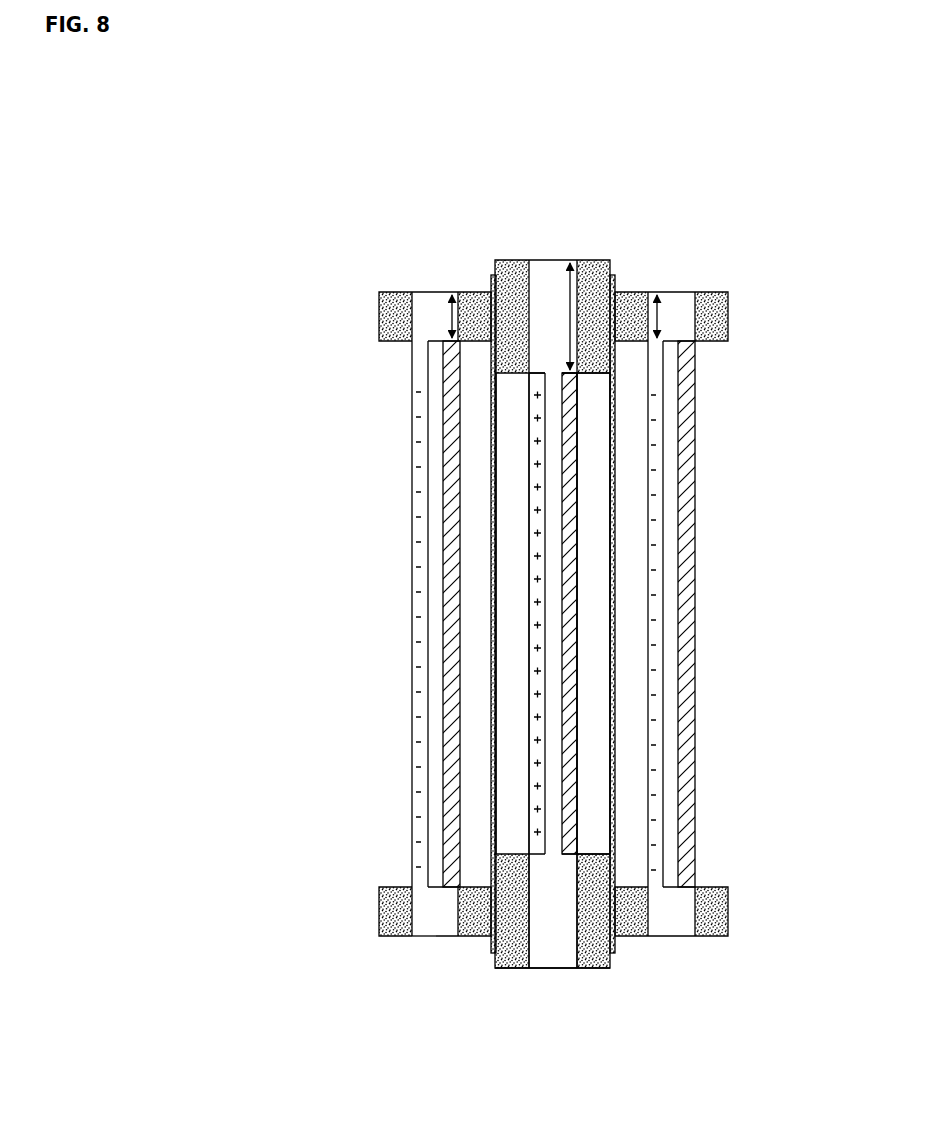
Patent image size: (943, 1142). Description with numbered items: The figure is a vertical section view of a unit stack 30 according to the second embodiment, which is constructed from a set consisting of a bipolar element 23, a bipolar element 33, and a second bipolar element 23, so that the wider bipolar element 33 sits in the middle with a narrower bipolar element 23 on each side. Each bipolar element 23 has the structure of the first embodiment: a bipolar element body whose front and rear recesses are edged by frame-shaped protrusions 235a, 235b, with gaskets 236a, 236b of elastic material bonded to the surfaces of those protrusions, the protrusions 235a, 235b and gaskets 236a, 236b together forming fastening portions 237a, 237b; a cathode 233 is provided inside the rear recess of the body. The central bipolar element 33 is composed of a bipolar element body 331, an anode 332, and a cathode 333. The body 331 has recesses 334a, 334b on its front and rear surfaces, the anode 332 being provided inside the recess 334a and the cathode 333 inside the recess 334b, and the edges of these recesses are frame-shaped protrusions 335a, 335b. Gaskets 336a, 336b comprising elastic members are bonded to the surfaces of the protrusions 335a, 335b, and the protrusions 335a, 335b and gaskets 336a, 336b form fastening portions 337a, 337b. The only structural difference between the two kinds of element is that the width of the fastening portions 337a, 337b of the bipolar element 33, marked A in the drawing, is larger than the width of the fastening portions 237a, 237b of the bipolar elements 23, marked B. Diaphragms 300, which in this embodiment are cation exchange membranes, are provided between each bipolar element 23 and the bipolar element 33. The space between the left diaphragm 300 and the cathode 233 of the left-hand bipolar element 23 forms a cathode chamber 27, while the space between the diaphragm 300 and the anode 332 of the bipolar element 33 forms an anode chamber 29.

The unit stack 30 is at (527, 157).
The bipolar element 23 is at (430, 250).
The bipolar element 33 is at (543, 246).
The cathode chamber 27 is at (489, 622).
The anode chamber 29 is at (525, 622).
The diaphragm 300 is at (493, 533).
The cathode 233 is at (447, 425).
The anode 332 is at (533, 733).
The cathode 333 is at (577, 677).
The recess 334a is at (545, 675).
The recess 334b is at (580, 630).
The bipolar element body 331 is at (553, 903).
The protrusion 235a is at (423, 918).
The protrusion 235b is at (453, 917).
The gasket 236a is at (390, 905).
The gasket 236b is at (483, 933).
The fastening portion 237a is at (318, 990).
The fastening portion 237b is at (438, 1023).
The protrusion 335a is at (537, 957).
The protrusion 335b is at (570, 953).
The gasket 336a is at (512, 970).
The gasket 336b is at (597, 955).
The fastening portion 337a is at (662, 1047).
The fastening portion 337b is at (787, 1028).